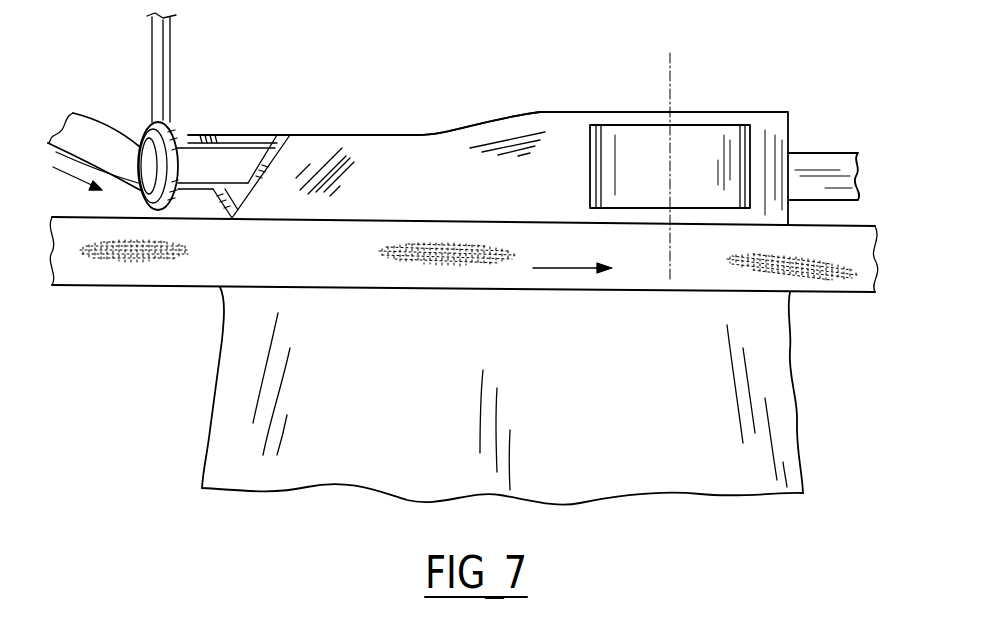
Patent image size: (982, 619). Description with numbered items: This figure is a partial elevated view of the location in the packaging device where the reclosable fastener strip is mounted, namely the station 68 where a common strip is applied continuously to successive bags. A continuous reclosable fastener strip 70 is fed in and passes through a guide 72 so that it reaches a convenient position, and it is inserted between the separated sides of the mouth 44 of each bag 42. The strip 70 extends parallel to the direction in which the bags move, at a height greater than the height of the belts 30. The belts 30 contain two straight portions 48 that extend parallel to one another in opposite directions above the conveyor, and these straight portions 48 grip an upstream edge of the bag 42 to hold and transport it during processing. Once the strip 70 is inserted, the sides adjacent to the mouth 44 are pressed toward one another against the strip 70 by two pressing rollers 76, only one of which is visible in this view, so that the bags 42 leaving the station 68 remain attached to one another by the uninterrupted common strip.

The belts 30 is at (855, 267).
The bag 42 is at (682, 455).
The mouth 44 is at (395, 157).
The straight portions 48 is at (187, 265).
The station 68 is at (540, 96).
The reclosable fastener strip 70 is at (97, 147).
The guide 72 is at (172, 140).
The pressing rollers 76 is at (705, 155).